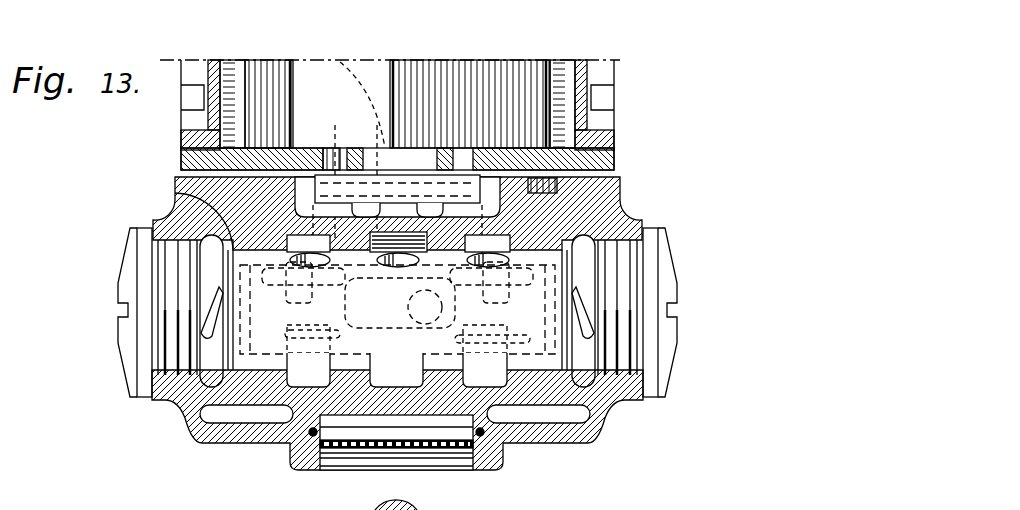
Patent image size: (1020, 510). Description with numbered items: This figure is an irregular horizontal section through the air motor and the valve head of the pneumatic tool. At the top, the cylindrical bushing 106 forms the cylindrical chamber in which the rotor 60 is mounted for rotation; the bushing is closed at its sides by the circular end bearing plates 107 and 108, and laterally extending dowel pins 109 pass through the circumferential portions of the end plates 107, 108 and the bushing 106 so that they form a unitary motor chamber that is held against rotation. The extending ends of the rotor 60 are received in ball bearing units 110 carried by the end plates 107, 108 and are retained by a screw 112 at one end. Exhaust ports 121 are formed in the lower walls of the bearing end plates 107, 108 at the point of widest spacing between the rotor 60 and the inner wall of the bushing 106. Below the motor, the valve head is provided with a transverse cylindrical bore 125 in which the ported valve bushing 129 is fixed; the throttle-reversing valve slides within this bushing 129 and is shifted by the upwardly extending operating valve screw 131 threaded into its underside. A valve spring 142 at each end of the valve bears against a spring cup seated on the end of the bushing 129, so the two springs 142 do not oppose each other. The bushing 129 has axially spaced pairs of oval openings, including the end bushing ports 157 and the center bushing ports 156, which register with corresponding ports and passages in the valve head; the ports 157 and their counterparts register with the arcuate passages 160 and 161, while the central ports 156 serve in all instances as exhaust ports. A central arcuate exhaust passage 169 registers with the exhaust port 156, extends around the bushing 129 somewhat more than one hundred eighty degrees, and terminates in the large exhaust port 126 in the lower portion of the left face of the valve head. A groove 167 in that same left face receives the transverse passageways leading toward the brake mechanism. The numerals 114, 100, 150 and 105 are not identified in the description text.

The rotor 60 is at (448, 66).
The piston rings 114 is at (508, 62).
The cylindrical bushing 106 is at (592, 100).
The end bearing plate 108 is at (616, 158).
The groove 167 is at (590, 180).
The valve bushing 129 is at (622, 198).
The transverse cylindrical bore 125 is at (176, 194).
The exhaust ports 121 is at (383, 140).
The exhaust port 126 is at (338, 150).
The ball bearing units 110 is at (380, 180).
The clamp ring 100 is at (668, 292).
The valve spring 142 is at (594, 290).
The bolt 150 is at (298, 268).
The screw 112 is at (411, 228).
The oval openings 157 is at (495, 265).
The center bushing ports 156 is at (397, 309).
The operating valve screw 131 is at (398, 312).
The dowel pins 109 is at (288, 341).
The end bearing plate 107 is at (312, 325).
The passage 105 is at (499, 333).
The arcuate passage 160 is at (303, 388).
The arcuate passage 161 is at (497, 390).
The central arcuate exhaust passage 169 is at (403, 390).